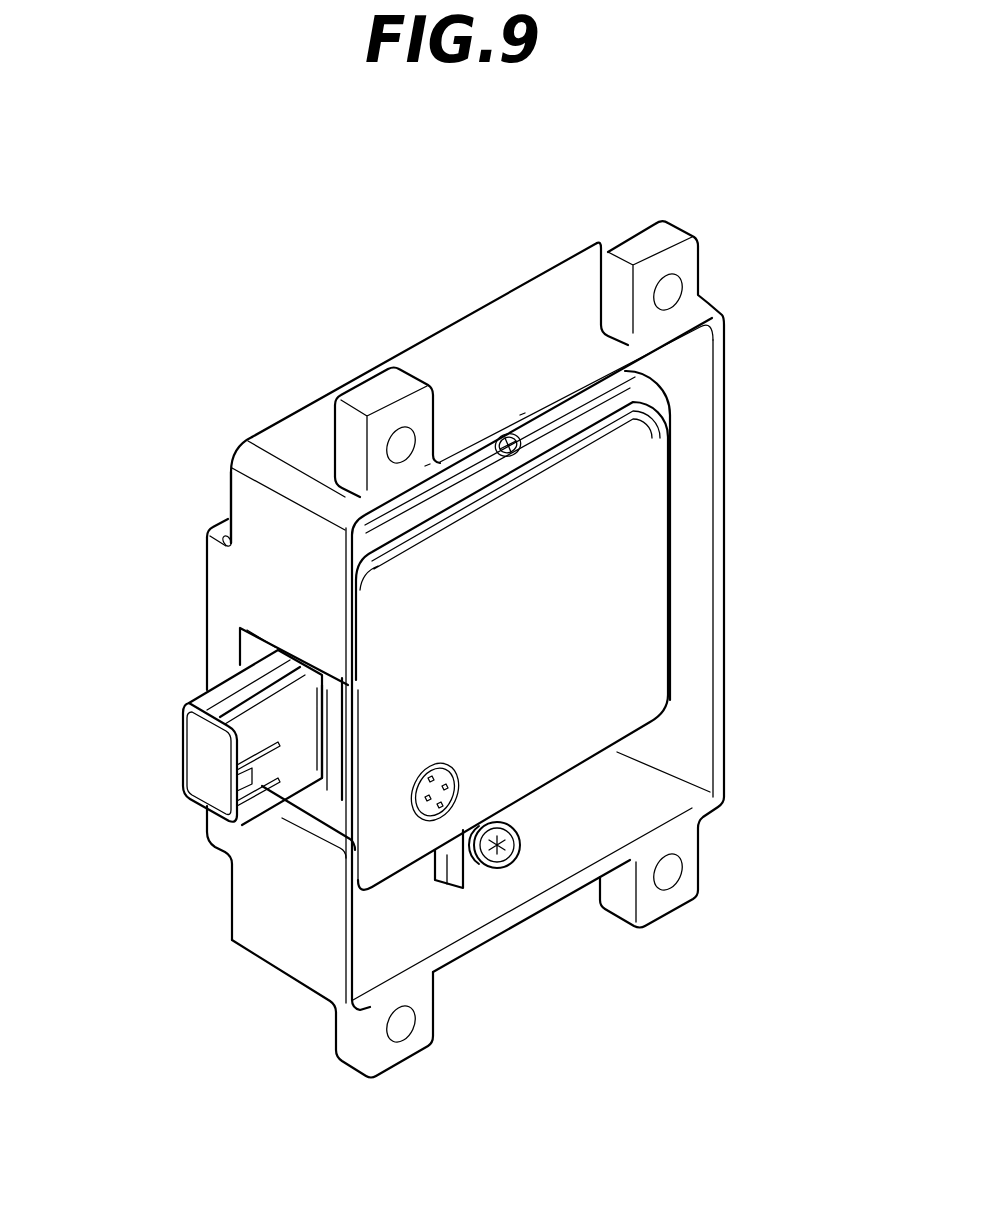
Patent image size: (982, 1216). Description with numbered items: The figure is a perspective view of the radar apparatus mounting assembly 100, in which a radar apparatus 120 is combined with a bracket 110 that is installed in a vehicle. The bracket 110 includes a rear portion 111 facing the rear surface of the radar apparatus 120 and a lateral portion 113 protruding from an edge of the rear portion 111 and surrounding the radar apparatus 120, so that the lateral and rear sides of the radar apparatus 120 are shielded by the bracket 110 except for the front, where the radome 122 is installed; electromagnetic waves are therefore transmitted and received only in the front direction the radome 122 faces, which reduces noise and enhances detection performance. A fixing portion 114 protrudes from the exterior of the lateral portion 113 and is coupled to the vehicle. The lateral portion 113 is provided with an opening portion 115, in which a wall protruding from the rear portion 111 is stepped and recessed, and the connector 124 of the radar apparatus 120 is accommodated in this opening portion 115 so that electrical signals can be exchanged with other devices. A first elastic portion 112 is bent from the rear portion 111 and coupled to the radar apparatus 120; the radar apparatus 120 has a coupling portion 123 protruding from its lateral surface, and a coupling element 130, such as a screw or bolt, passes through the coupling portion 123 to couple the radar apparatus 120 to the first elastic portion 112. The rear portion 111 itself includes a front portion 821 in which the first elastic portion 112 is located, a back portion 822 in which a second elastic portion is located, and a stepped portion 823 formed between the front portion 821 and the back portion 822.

The radar apparatus mounting assembly 100 is at (207, 223).
The bracket 110 is at (258, 420).
The rear portion 111 is at (145, 701).
The first elastic portion 112 is at (418, 863).
The lateral portion 113 is at (505, 332).
The fixing portion 114 is at (662, 238).
The opening portion 115 is at (280, 812).
The radar apparatus 120 is at (688, 507).
The radome 122 is at (600, 619).
The coupling portion 123 is at (473, 865).
The connector 124 is at (210, 740).
The coupling element 130 is at (520, 852).
The front portion 821 is at (231, 492).
The back portion 822 is at (178, 738).
The stepped portion 823 is at (215, 523).